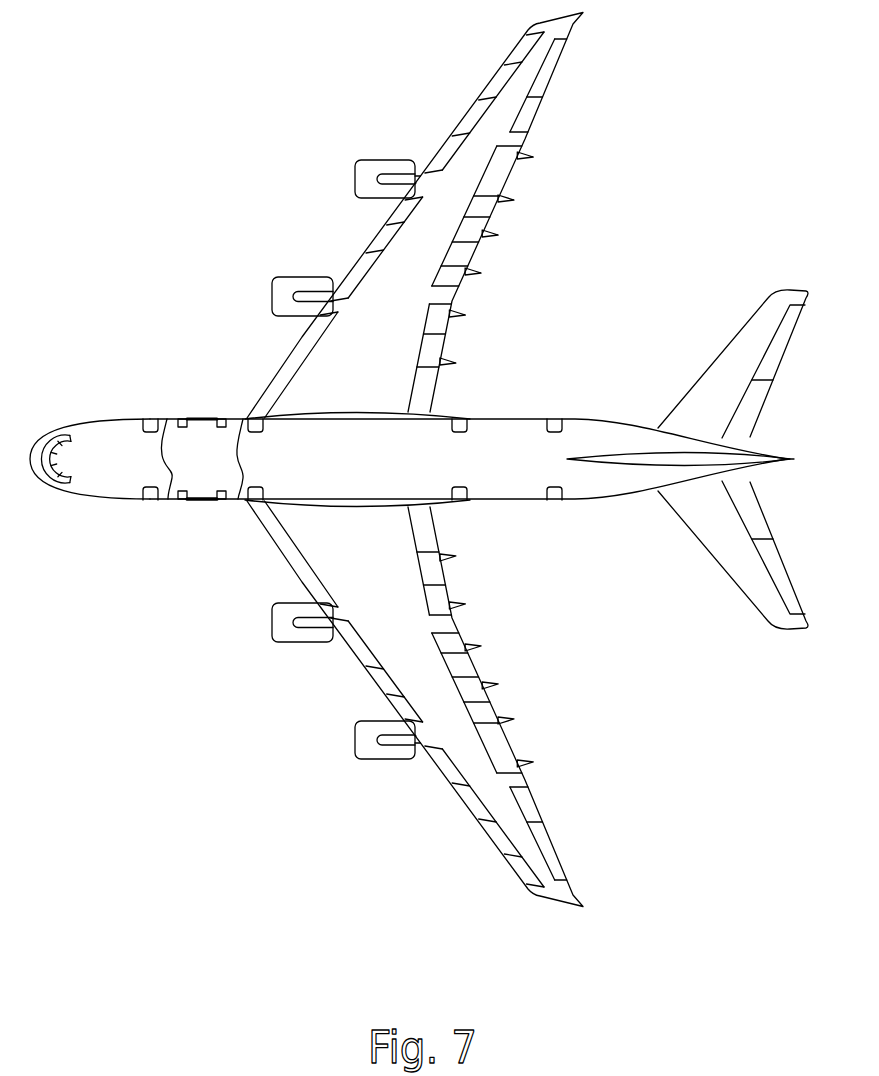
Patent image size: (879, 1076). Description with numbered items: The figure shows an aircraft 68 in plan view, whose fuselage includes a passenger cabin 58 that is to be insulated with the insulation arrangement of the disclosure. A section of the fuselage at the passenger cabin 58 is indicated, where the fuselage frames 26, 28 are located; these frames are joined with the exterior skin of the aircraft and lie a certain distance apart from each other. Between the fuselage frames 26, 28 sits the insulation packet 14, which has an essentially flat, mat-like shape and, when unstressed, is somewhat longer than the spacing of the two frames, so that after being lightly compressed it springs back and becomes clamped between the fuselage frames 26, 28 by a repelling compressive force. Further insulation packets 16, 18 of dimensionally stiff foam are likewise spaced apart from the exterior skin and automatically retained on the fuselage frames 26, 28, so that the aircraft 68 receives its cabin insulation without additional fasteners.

The aircraft 68 is at (145, 250).
The passenger cabin 58 is at (188, 478).
The insulation packet 14 is at (207, 502).
The insulation packet 16 is at (183, 417).
The insulation packet 18 is at (223, 417).
The fuselage frame 26 is at (183, 502).
The fuselage frame 28 is at (222, 502).